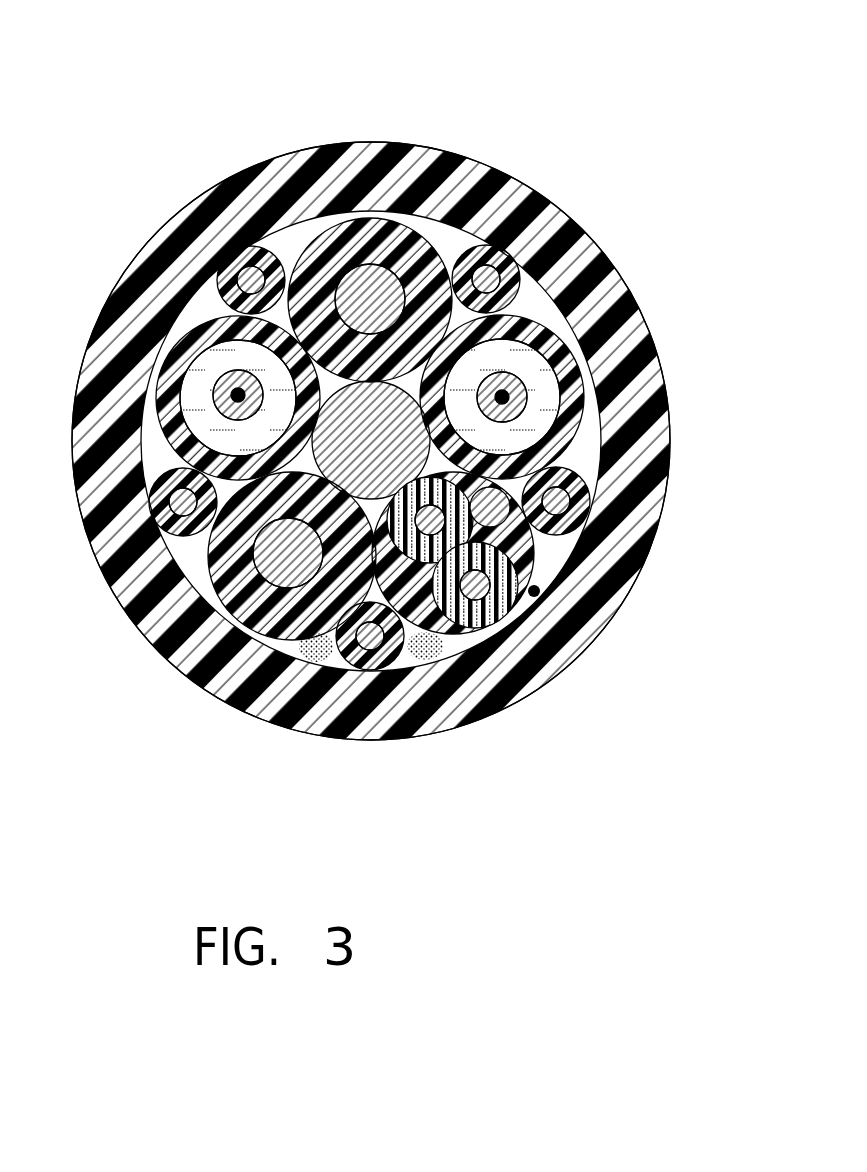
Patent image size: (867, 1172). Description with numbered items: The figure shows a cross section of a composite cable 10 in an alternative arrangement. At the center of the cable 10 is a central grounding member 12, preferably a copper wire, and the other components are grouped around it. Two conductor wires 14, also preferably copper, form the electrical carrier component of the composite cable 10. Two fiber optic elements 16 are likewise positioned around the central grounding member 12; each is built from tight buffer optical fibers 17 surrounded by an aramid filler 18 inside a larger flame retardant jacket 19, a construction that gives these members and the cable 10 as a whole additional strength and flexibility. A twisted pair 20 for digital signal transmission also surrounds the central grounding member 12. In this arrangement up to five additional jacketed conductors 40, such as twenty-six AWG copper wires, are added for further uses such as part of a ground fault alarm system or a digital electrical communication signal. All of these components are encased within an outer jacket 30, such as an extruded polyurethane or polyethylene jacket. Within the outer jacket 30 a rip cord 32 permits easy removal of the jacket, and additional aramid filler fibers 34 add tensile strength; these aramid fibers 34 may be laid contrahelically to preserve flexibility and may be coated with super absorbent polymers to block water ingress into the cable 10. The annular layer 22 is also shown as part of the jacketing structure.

The composite cable 10 is at (263, 100).
The central grounding member 12 is at (533, 237).
The conductor wires 14 is at (397, 237).
The fiber optic elements 16 is at (612, 470).
The tight buffer optical fibers 17 is at (507, 382).
The aramid filler 18 is at (547, 405).
The flame retardant jacket 19 is at (557, 346).
The twisted pair 20 is at (540, 592).
The binder layer 22 is at (622, 546).
The outer jacket 30 is at (187, 670).
The rip cord 32 is at (553, 620).
The aramid filler fibers 34 is at (430, 650).
The jacketed conductors 40 is at (233, 247).